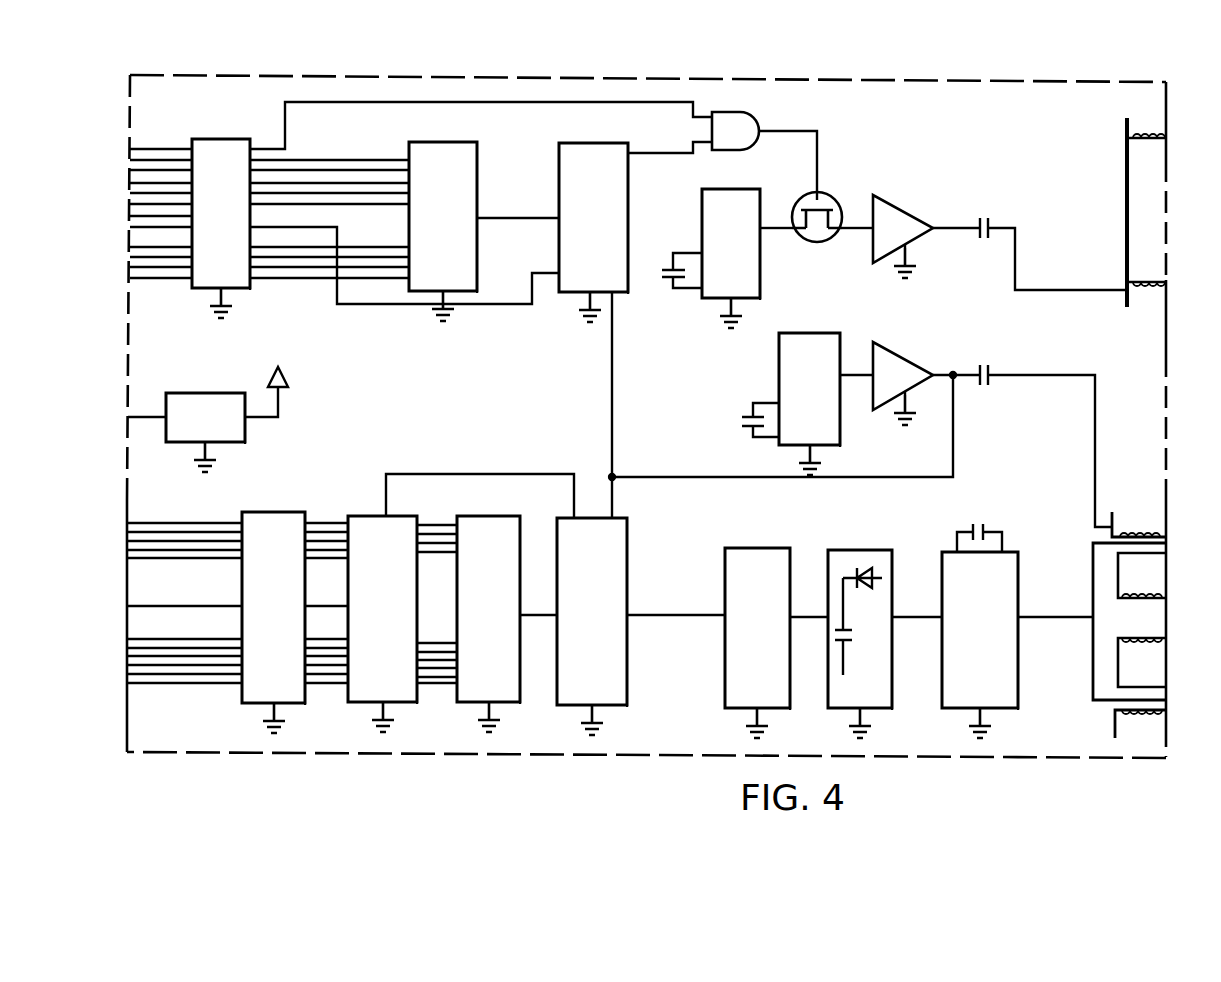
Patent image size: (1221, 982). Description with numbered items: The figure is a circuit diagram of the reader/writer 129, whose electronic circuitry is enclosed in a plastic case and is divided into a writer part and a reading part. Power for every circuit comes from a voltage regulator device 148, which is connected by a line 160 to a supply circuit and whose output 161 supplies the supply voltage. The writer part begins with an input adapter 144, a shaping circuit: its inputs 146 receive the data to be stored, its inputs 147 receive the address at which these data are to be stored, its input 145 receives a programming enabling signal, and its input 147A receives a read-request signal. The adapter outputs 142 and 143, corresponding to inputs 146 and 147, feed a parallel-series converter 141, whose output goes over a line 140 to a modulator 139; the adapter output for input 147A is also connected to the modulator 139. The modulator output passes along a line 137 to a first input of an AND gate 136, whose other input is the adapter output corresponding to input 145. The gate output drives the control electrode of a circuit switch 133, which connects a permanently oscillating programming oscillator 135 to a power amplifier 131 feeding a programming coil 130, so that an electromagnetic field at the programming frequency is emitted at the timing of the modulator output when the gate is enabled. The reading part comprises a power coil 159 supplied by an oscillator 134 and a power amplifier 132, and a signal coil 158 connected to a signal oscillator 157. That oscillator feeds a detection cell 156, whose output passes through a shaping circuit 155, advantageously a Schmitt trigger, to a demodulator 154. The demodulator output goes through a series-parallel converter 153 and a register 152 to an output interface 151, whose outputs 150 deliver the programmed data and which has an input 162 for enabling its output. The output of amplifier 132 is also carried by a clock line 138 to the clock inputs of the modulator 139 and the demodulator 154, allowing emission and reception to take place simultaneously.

The reader/writer 129 is at (1166, 367).
The programming coil 130 is at (1137, 120).
The power amplifier 131 is at (953, 186).
The power amplifier 132 is at (912, 340).
The circuit switch 133 is at (860, 176).
The oscillator 134 is at (792, 404).
The programming oscillator 135 is at (713, 246).
The AND gate 136 is at (746, 152).
The enable line 137 is at (674, 156).
The clock line 138 is at (614, 324).
The modulator 139 is at (575, 204).
The line 140 is at (536, 198).
The parallel-series converter 141 is at (424, 209).
The output 142 is at (382, 191).
The output 143 is at (369, 280).
The input adapter 144 is at (200, 202).
The input 145 is at (148, 150).
The inputs 146 is at (148, 183).
The input 147A is at (148, 216).
The inputs 147 is at (146, 277).
The voltage regulator device 148 is at (186, 432).
The outputs 150 is at (216, 670).
The output interface 151 is at (291, 604).
The register 152 is at (365, 612).
The series-parallel converter 153 is at (471, 612).
The demodulator 154 is at (574, 618).
The shaping circuit 155 is at (739, 656).
The detection cell 156 is at (848, 679).
The signal oscillator 157 is at (962, 650).
The signal coil 158 is at (1110, 668).
The power coil 159 is at (1146, 722).
The line 160 is at (126, 416).
The output 161 is at (254, 418).
The input 162 is at (128, 605).